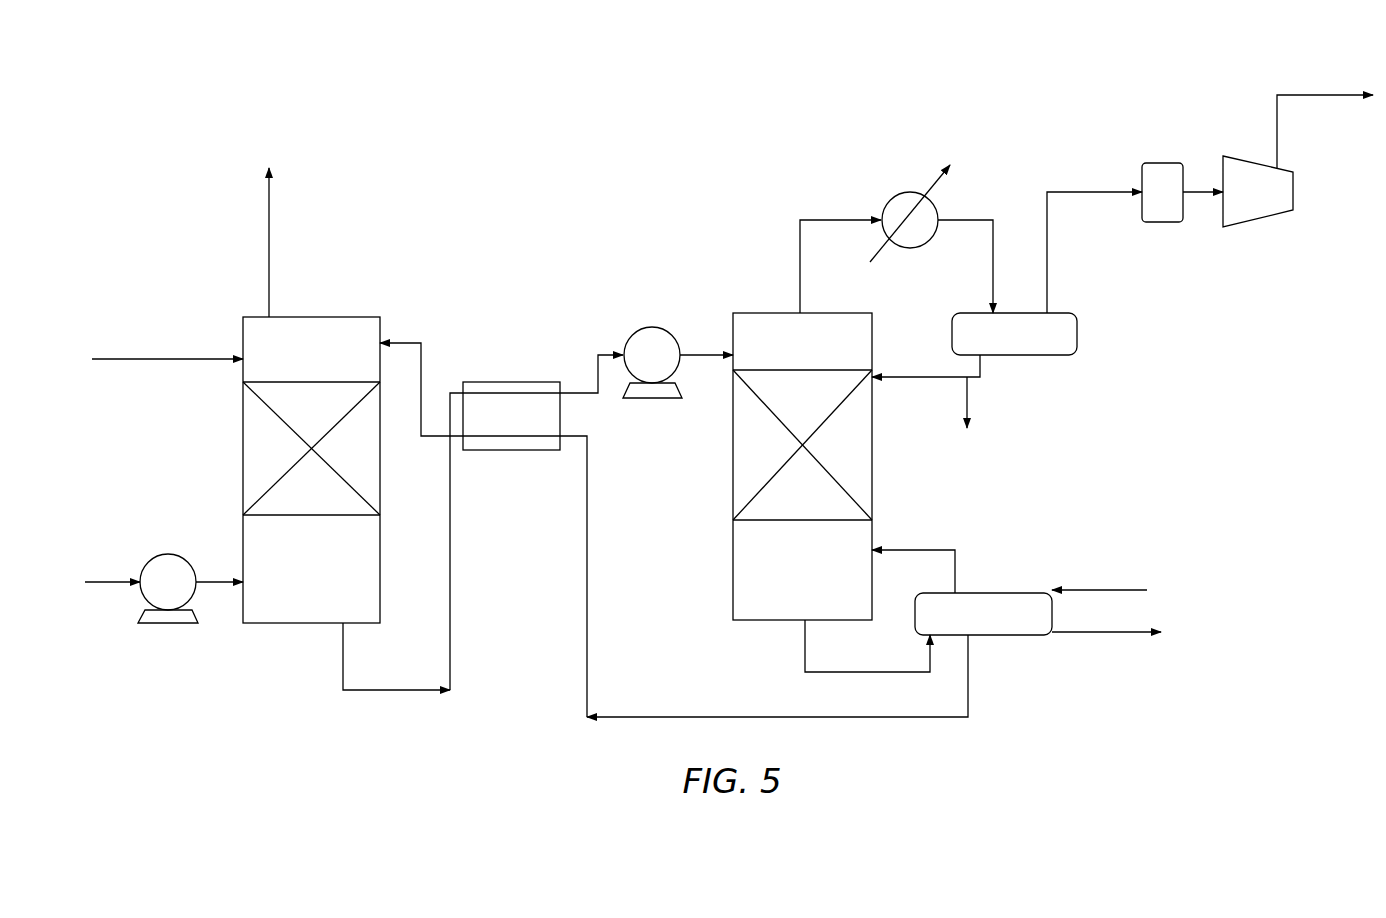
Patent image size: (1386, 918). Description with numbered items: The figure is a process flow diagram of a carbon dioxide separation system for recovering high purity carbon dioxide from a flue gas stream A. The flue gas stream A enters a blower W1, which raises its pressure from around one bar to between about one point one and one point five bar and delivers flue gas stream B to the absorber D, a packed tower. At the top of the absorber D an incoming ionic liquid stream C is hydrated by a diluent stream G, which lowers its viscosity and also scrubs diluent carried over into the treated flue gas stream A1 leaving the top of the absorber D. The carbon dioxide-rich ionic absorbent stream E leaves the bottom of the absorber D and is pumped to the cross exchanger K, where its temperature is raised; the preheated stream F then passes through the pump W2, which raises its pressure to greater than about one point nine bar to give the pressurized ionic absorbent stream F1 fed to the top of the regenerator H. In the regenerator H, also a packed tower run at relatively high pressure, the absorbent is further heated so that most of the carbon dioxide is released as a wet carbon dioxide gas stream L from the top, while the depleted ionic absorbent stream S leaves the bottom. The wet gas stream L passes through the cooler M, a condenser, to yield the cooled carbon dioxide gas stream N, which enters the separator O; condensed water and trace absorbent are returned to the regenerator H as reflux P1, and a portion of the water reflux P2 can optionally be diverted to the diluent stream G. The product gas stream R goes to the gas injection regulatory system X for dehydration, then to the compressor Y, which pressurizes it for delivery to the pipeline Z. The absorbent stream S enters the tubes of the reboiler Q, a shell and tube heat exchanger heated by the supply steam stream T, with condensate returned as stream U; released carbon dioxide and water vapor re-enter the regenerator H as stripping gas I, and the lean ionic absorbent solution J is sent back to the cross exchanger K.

The flue gas stream A is at (112, 561).
The treated flue gas stream A1 is at (296, 242).
The flue gas stream B is at (219, 561).
The ionic liquid stream C is at (421, 369).
The absorber D is at (311, 470).
The ionic absorbent stream E is at (403, 563).
The preheated stream F is at (591, 352).
The pressurized ionic absorbent stream F1 is at (706, 333).
The diluent stream G is at (167, 338).
The regenerator H is at (802, 466).
The stripping gas I is at (913, 551).
The ionic absorbent solution J is at (776, 576).
The cross exchanger K is at (511, 416).
The wet carbon dioxide gas stream L is at (840, 253).
The cooler M is at (910, 209).
The cooled carbon dioxide gas stream N is at (965, 248).
The separator O is at (1014, 334).
The reflux P1 is at (926, 383).
The water reflux P2 is at (990, 408).
The reboiler Q is at (983, 614).
The gas stream R is at (1094, 232).
The ionic absorbent stream S is at (856, 648).
The supply heating medium stream T is at (1106, 569).
The return condensate stream U is at (1115, 654).
The blower W1 is at (168, 588).
The pump W2 is at (652, 362).
The gas injection regulatory system X is at (1182, 192).
The compressor Y is at (1258, 205).
The pipeline Z is at (1325, 131).